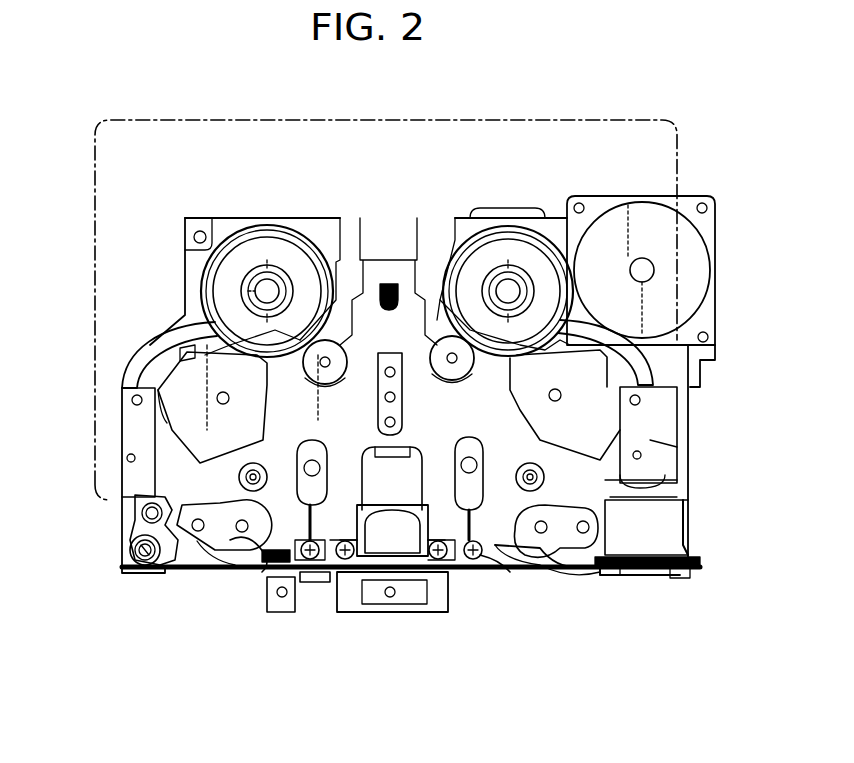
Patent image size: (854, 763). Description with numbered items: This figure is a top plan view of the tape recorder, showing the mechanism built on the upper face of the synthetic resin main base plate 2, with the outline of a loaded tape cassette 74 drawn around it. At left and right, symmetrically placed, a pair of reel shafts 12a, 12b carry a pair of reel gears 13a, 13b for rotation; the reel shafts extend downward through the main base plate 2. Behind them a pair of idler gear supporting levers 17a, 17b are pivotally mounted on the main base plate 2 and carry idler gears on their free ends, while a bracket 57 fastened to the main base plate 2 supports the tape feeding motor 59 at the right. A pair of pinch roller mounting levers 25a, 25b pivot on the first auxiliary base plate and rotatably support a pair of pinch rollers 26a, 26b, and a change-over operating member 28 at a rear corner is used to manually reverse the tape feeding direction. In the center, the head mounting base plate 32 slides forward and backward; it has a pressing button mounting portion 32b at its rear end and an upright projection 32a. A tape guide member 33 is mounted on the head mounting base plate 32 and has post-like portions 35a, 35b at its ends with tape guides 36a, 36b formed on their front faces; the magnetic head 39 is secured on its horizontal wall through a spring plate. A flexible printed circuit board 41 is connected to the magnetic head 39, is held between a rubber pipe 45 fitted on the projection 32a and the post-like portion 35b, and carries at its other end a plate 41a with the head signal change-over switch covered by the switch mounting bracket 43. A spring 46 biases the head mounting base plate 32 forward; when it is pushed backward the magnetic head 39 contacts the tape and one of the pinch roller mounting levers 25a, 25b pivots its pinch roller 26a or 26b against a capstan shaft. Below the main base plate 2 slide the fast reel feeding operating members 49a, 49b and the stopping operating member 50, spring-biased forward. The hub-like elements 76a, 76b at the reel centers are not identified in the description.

The main base plate 2 is at (690, 418).
The reel shaft 12a is at (255, 292).
The reel shaft 12b is at (520, 290).
The reel gear 13a is at (262, 232).
The reel gear 13b is at (497, 230).
The idler gear supporting lever 17a is at (198, 425).
The idler gear supporting lever 17b is at (587, 423).
The pinch roller mounting lever 25a is at (168, 570).
The pinch roller mounting lever 25b is at (598, 530).
The pinch roller 26a is at (200, 538).
The pinch roller 26b is at (593, 578).
The change-over operating member 28 is at (120, 548).
The head mounting base plate 32 is at (368, 257).
The projection 32a is at (462, 575).
The pressing button mounting portion 32b is at (390, 610).
The tape guide member 33 is at (320, 582).
The post-like portion 35a is at (262, 572).
The post-like portion 35b is at (500, 572).
The tape guide 36a is at (337, 612).
The tape guide 36b is at (445, 512).
The magnetic head 39 is at (380, 520).
The flexible printed circuit board 41 is at (560, 583).
The plate 41a is at (670, 578).
The switch mounting bracket 43 is at (690, 513).
The rubber pipe 45 is at (475, 575).
The spring 46 is at (412, 300).
The fast reel feeding operating member 49a is at (448, 612).
The fast reel feeding operating member 49b is at (347, 612).
The stopping operating member 50 is at (282, 612).
The bracket 57 is at (715, 215).
The tape feeding motor 59 is at (622, 212).
The tape cassette 74 is at (677, 150).
The reel hub 76a is at (254, 280).
The reel hub 76b is at (520, 265).